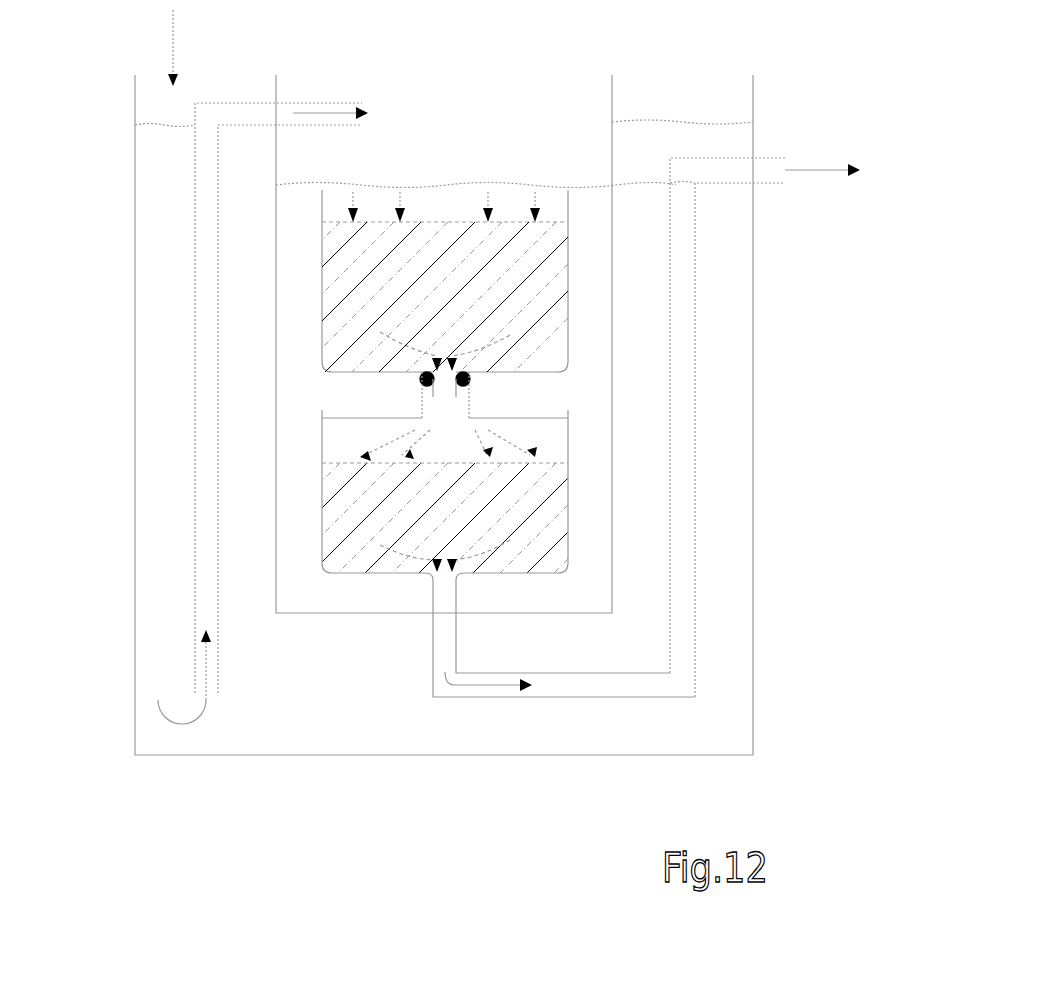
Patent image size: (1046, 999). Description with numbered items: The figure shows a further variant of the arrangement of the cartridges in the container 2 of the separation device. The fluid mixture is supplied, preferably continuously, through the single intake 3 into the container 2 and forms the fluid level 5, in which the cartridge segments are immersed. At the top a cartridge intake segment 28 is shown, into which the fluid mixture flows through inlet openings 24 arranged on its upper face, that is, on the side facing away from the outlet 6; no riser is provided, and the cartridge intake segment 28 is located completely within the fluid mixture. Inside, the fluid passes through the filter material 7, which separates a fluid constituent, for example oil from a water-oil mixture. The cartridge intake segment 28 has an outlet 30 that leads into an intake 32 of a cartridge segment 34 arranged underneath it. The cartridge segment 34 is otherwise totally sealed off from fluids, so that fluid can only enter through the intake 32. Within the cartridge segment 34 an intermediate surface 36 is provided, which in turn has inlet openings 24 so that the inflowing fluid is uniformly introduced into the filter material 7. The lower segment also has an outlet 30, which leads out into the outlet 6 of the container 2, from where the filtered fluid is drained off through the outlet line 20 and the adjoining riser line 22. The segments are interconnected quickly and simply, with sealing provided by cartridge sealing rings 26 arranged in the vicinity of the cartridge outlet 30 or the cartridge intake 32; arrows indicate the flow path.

The container 2 is at (612, 422).
The intake 3 is at (350, 106).
The fluid level 5 is at (545, 183).
The outlet 6 is at (438, 630).
The filter material 7 is at (553, 262).
The outlet line 20 is at (558, 687).
The riser line 22 is at (682, 463).
The inlet openings 24 is at (400, 225).
The cartridge sealing rings 26 is at (470, 377).
The cartridge intake segment 28 is at (335, 327).
The outlet 30 is at (442, 392).
The intake 32 is at (440, 412).
The cartridge segment 34 is at (548, 525).
The intermediate surface 36 is at (432, 463).